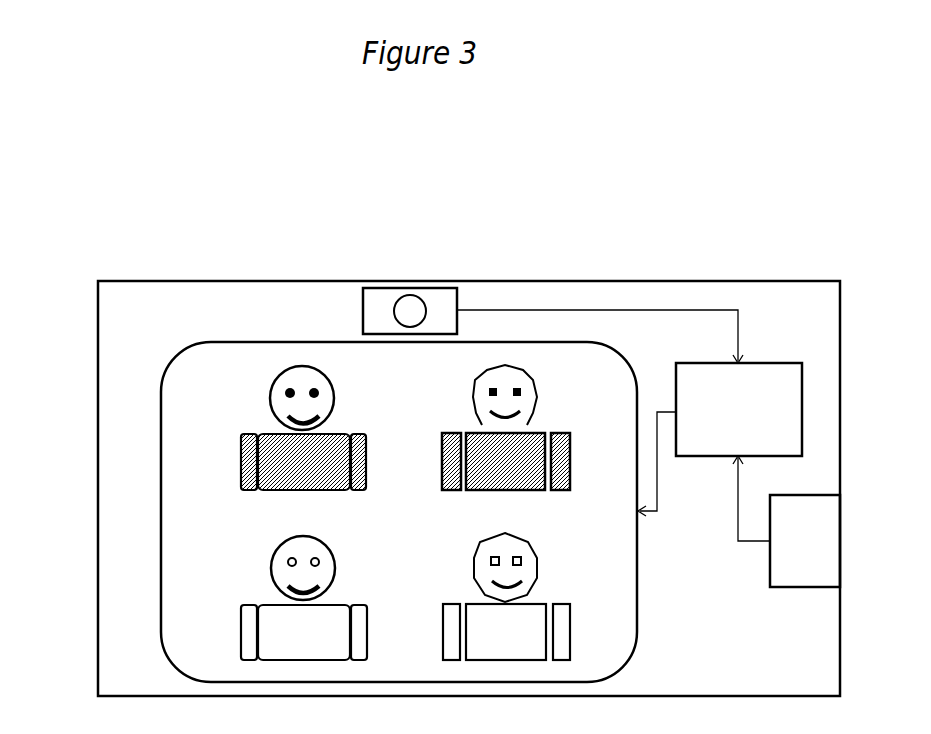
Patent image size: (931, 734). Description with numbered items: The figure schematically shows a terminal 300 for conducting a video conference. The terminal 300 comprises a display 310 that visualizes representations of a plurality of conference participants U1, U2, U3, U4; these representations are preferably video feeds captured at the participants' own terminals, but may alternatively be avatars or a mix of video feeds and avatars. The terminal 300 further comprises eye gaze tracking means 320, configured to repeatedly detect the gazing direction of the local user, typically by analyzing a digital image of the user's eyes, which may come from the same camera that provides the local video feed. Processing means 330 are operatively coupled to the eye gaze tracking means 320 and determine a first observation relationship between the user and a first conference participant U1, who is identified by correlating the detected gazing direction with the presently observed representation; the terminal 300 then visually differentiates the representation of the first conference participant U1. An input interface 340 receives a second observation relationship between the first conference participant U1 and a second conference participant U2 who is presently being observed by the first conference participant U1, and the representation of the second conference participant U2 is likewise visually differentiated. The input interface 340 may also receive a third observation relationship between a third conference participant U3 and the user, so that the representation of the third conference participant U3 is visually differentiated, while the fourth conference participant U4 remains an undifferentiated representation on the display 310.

The video conferencing terminal 300 is at (98, 338).
The display 310 is at (182, 352).
The eye gaze tracking means 320 is at (363, 320).
The processing means 330 is at (739, 409).
The input interface 340 is at (805, 541).
The first conference participant U1 is at (240, 478).
The second conference participant U2 is at (240, 649).
The third conference participant U3 is at (533, 465).
The fourth conference participant U4 is at (570, 637).